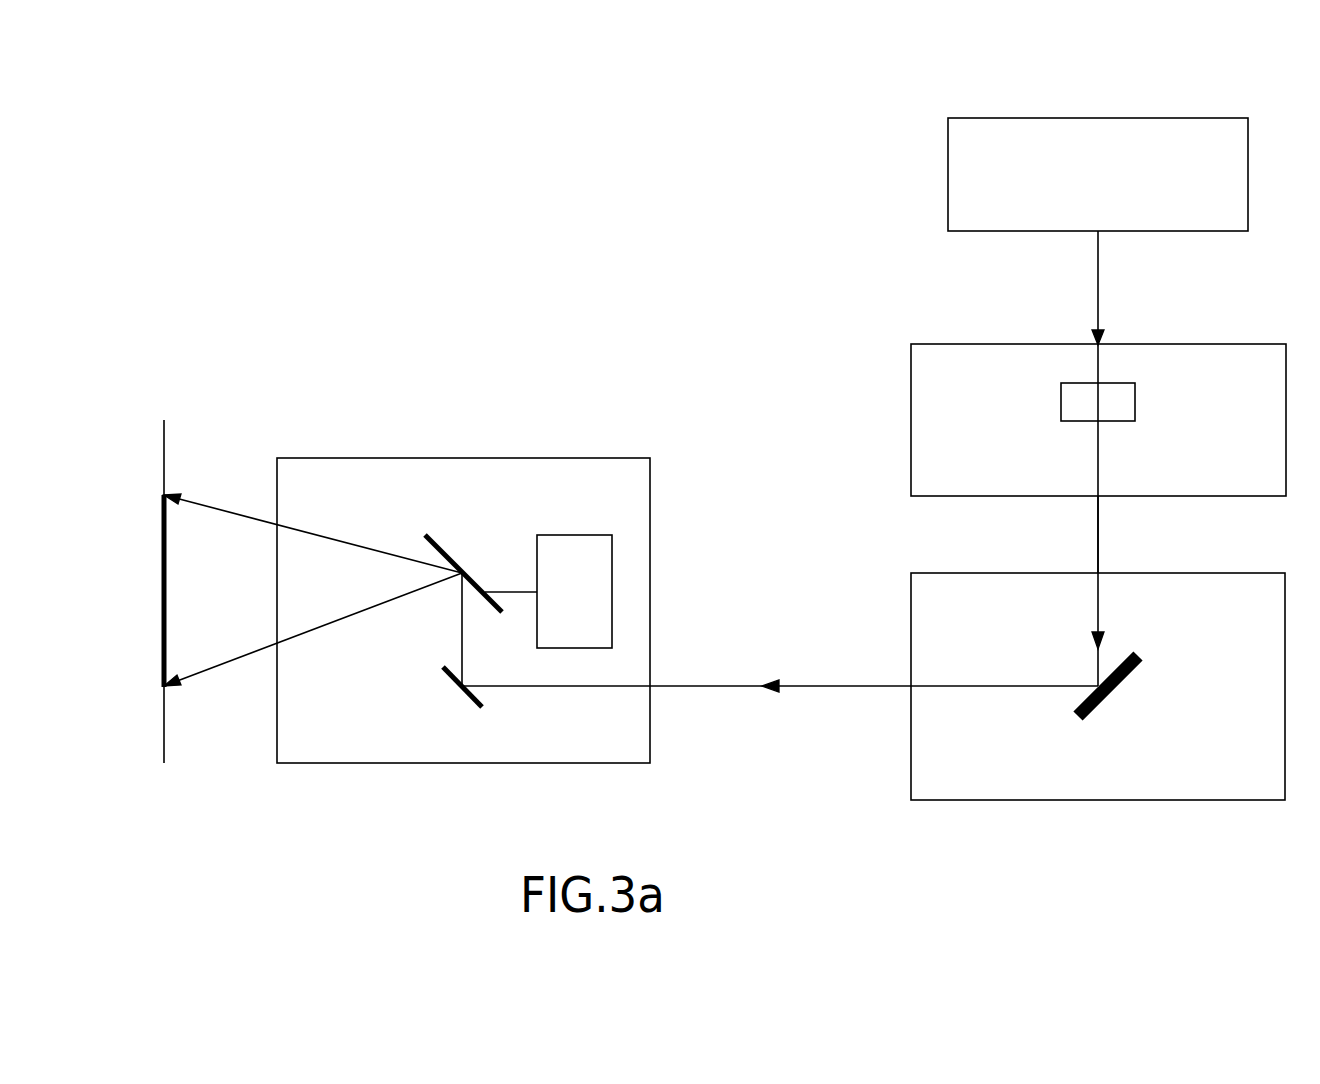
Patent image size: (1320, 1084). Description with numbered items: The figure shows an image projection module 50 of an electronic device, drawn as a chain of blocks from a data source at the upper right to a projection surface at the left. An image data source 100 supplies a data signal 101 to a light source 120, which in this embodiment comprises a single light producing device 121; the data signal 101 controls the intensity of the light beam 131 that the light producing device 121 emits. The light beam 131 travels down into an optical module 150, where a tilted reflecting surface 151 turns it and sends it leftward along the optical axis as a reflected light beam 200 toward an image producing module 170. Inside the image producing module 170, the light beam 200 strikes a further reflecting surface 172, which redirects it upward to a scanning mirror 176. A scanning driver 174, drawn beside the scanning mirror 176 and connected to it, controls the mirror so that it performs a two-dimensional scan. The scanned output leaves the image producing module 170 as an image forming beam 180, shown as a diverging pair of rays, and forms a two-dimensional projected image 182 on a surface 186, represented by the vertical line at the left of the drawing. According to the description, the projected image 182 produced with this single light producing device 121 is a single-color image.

The image projection module 50 is at (716, 226).
The image data source 100 is at (948, 168).
The data signal 101 is at (1098, 306).
The light source 120 is at (911, 452).
The light producing device 121 is at (1105, 421).
The light beam 131 is at (1098, 562).
The optical module 150 is at (911, 612).
The reflecting surface 151 is at (1120, 658).
The light beam 200 is at (718, 686).
The image producing module 170 is at (535, 458).
The reflecting surface 172 is at (469, 696).
The scanning driver 174 is at (548, 535).
The scanning mirror 176 is at (433, 534).
The image forming beam 180 is at (258, 505).
The projected image 182 is at (164, 580).
The surface 186 is at (164, 438).